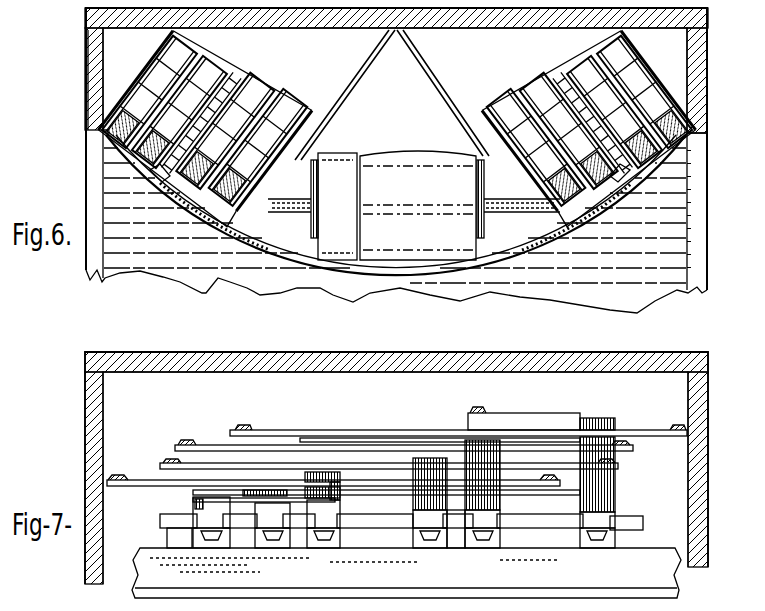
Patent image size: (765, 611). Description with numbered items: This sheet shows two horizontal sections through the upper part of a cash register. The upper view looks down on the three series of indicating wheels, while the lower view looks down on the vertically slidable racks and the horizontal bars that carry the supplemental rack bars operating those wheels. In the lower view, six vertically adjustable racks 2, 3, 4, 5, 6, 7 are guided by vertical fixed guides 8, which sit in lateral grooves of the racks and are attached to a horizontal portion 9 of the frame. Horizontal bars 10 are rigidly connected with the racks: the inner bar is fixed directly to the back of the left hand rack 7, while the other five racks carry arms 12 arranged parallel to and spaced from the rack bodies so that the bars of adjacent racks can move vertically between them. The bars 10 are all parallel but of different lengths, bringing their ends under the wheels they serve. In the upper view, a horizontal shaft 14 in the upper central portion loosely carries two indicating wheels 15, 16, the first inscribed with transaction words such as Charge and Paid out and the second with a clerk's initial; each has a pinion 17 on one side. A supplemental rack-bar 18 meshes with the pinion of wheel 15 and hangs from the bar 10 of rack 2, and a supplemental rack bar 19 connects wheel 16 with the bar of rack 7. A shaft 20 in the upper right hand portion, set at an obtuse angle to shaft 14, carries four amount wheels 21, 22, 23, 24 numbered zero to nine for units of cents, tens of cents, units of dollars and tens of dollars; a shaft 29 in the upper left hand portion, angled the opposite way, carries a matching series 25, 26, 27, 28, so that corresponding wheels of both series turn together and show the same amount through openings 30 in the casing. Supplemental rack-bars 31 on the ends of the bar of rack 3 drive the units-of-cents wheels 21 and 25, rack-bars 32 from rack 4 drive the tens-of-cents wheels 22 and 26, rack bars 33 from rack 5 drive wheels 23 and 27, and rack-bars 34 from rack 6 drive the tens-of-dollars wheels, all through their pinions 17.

In FIG. 7, the vertically adjustable rack 2 is at (617, 510).
In FIG. 7, the vertically adjustable rack 3 is at (500, 506).
In FIG. 7, the vertically adjustable rack 4 is at (412, 507).
In FIG. 7, the vertically adjustable rack 5 is at (342, 508).
In FIG. 7, the vertically adjustable rack 6 is at (256, 510).
In FIG. 7, the vertically adjustable rack 7 is at (193, 505).
In FIG. 7, the vertical fixed guide 8 is at (160, 519).
In FIG. 7, the horizontal portion of the frame 9 is at (406, 573).
In FIG. 7, the horizontal bar 10 is at (395, 430).
In FIG. 7, the arm 12 is at (618, 420).
In FIG. 6, the horizontal shaft 14 is at (520, 222).
In FIG. 6, the indicating wheel 15 is at (418, 148).
In FIG. 6, the indicating wheel 16 is at (348, 150).
In FIG. 6, the pinion 17 is at (552, 120).
In FIG. 6, the supplemental rack-bar 18 is at (478, 152).
In FIG. 7, the supplemental rack-bar 18 is at (480, 407).
In FIG. 6, the supplemental rack bar 19 is at (318, 152).
In FIG. 7, the supplemental rack bar 19 is at (340, 490).
In FIG. 6, the horizontal shaft 20 is at (599, 95).
In FIG. 6, the rotatable indicating wheel 21 is at (647, 74).
In FIG. 6, the rotatable indicating wheel 22 is at (612, 94).
In FIG. 6, the rotatable indicating wheel 23 is at (566, 116).
In FIG. 6, the rotatable indicating wheel 24 is at (533, 133).
In FIG. 6, the amount indicating wheel 25 is at (265, 131).
In FIG. 6, the amount indicating wheel 26 is at (231, 113).
In FIG. 6, the amount indicating wheel 27 is at (122, 42).
In FIG. 6, the amount indicating wheel 28 is at (118, 0).
In FIG. 6, the horizontal shaft 29 is at (200, 93).
In FIG. 6, the opening 30 is at (170, 190).
In FIG. 6, the supplemental rack-bar 31 is at (683, 95).
In FIG. 7, the supplemental rack-bar 31 is at (243, 425).
In FIG. 6, the supplemental rack-bar 32 is at (390, 177).
In FIG. 7, the supplemental rack-bar 32 is at (188, 440).
In FIG. 7, the supplemental rack bar 33 is at (168, 459).
In FIG. 6, the supplemental rack-bar 34 is at (106, 95).
In FIG. 7, the supplemental rack-bar 34 is at (126, 470).